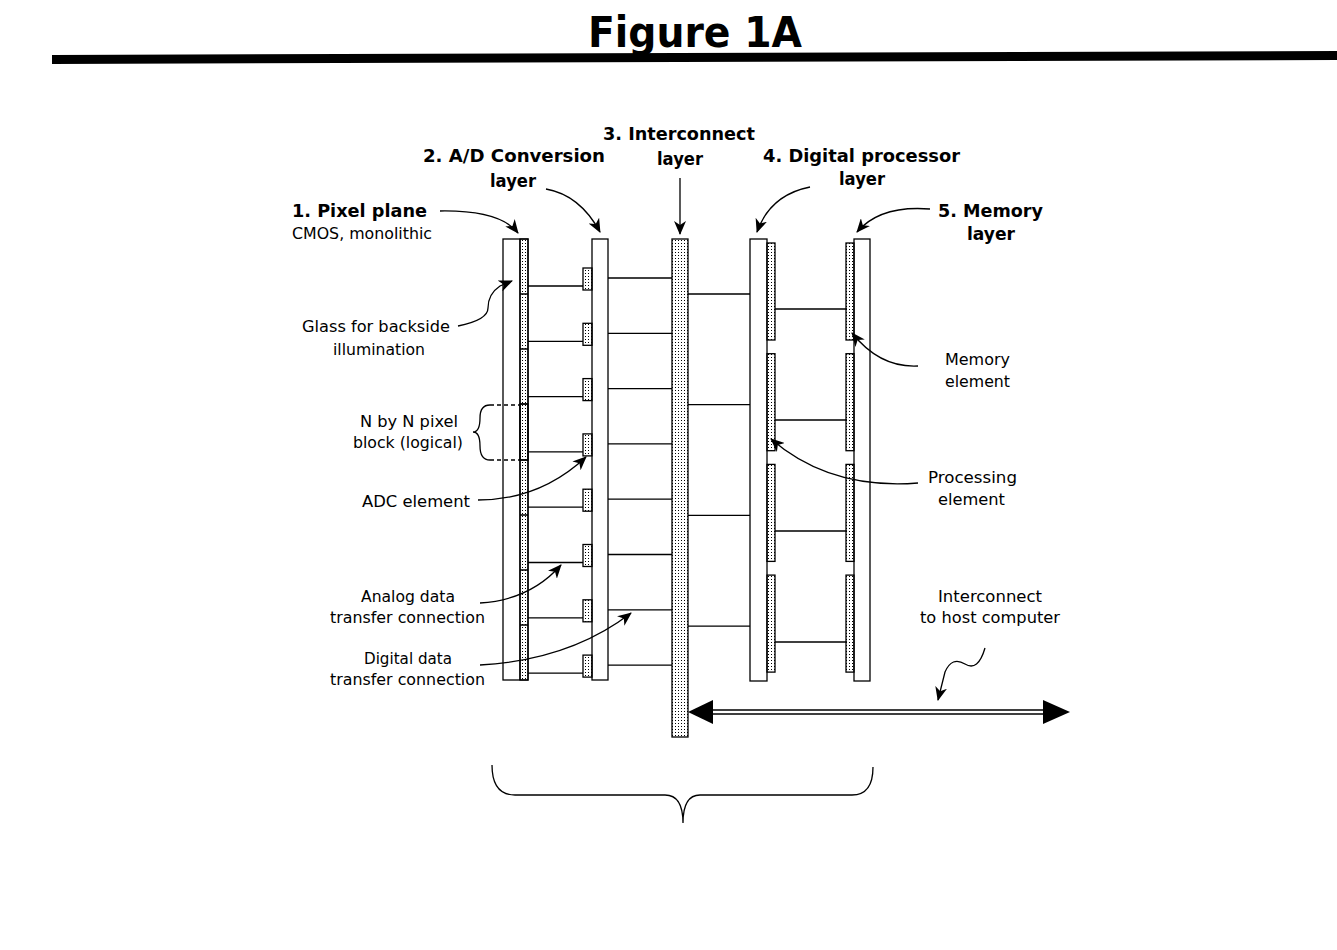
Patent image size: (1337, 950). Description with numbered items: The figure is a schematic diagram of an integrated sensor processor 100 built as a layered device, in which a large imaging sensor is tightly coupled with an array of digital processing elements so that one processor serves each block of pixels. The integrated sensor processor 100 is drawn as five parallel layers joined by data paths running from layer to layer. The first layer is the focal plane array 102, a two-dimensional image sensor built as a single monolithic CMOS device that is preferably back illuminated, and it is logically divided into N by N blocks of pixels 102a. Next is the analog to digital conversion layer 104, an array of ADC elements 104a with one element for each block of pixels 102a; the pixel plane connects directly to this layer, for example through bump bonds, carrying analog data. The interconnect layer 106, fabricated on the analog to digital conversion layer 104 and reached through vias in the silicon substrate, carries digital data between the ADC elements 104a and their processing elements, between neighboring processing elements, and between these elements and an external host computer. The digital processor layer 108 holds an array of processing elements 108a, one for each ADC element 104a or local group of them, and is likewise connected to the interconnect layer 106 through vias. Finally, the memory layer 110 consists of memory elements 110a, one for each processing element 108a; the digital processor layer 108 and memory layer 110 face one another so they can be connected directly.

The integrated sensor processor 100 is at (515, 812).
The focal plane array 102 is at (498, 703).
The blocks of pixels 102a is at (517, 412).
The analog to digital conversion layer 104 is at (602, 687).
The ADC element 104a is at (584, 685).
The interconnect layer 106 is at (680, 742).
The digital processor layer 108 is at (760, 685).
The processing element 108a is at (777, 678).
The memory layer 110 is at (874, 687).
The memory element 110a is at (852, 584).